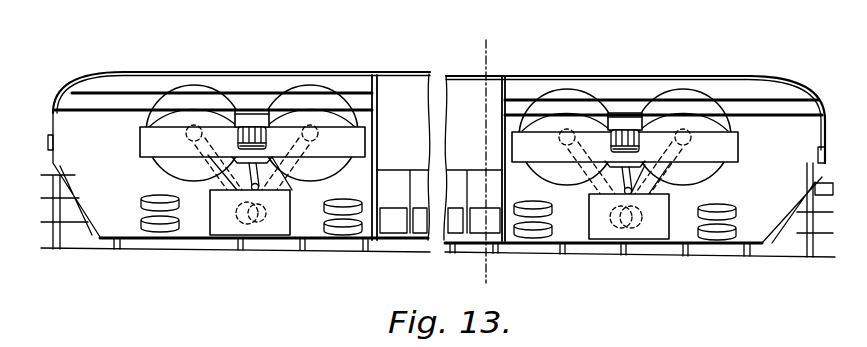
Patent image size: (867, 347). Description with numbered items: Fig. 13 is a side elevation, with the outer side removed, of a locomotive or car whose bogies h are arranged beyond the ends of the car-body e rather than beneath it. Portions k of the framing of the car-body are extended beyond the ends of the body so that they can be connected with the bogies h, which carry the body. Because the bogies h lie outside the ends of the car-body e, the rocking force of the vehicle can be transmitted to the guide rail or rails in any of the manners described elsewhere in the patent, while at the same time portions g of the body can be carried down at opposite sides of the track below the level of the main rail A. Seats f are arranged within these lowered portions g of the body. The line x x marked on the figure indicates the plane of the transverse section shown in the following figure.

The section line x x is at (483, 159).
The portions of the framing of the car-body k is at (250, 105).
The bogies h is at (439, 140).
The car-body e is at (474, 181).
The seats f is at (402, 201).
The portions of the body g is at (403, 221).
The main rail A is at (819, 189).